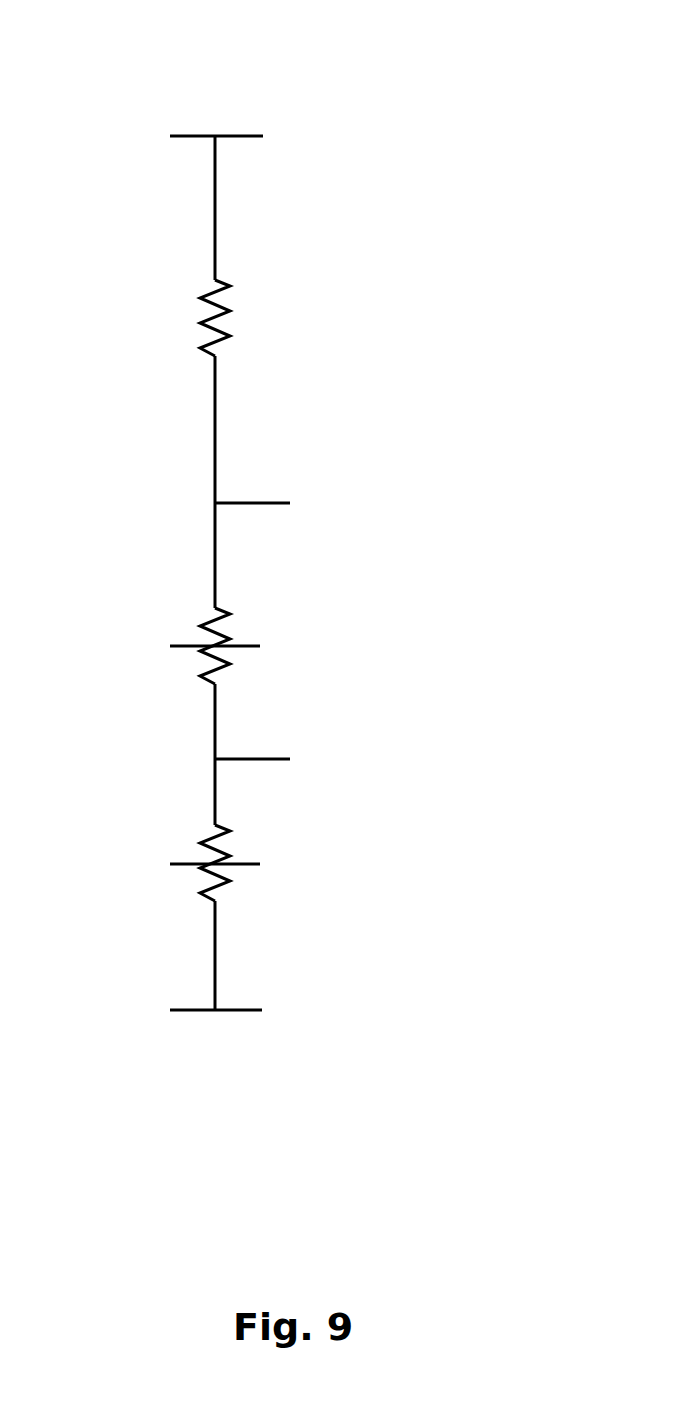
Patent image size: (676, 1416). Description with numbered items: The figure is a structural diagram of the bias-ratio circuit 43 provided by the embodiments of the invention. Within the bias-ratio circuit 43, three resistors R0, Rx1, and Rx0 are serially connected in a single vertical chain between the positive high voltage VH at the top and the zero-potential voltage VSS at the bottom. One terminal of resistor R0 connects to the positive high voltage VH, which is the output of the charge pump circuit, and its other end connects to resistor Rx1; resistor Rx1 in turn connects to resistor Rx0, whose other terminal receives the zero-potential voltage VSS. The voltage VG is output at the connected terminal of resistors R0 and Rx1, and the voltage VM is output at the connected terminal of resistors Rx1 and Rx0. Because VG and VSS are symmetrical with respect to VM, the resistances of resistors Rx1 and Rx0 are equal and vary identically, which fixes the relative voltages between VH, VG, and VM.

The bias-ratio circuit 43 is at (322, 550).
The positive high voltage VH is at (216, 179).
The resistor R0 is at (174, 318).
The voltage VG is at (289, 511).
The resistor Rx1 is at (160, 646).
The voltage VM is at (294, 763).
The resistor Rx0 is at (160, 863).
The zero-potential voltage VSS is at (216, 993).